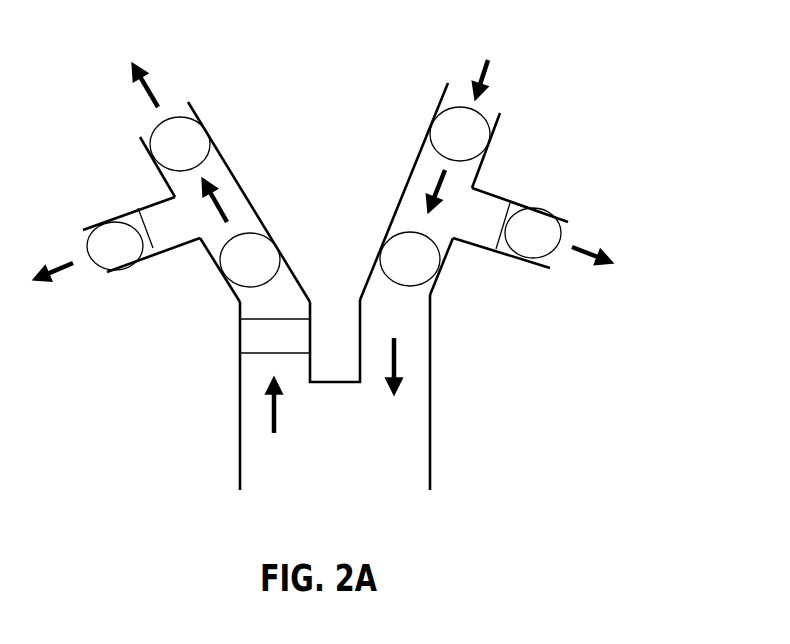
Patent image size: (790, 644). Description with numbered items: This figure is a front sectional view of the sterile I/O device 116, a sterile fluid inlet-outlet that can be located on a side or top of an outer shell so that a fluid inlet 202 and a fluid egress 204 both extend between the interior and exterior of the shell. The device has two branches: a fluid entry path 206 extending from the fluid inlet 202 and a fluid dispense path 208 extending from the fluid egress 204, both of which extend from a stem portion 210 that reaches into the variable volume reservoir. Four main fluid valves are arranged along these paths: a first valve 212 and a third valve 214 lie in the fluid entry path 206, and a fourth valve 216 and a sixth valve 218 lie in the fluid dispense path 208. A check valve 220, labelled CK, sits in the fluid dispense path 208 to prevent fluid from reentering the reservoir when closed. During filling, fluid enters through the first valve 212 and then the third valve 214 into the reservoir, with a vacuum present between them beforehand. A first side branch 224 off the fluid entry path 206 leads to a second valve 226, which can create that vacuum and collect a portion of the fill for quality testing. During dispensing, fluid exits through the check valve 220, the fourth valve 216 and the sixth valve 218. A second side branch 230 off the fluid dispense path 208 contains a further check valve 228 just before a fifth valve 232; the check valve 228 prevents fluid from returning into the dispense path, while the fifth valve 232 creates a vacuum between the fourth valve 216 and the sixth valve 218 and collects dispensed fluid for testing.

The sterile I/O device 116 is at (662, 83).
The fluid inlet 202 is at (507, 94).
The fluid egress 204 is at (188, 90).
The fluid entry path 206 is at (447, 301).
The fluid dispense path 208 is at (223, 310).
The stem portion 210 is at (432, 455).
The V1 valve 212 is at (491, 131).
The V3 valve 214 is at (378, 247).
The V4 valve 216 is at (279, 247).
The V6 valve 218 is at (210, 134).
The check valve 220 is at (240, 338).
The first side branch 224 is at (566, 192).
The V2 valve 226 is at (562, 230).
The check valve 228 is at (150, 203).
The second side branch 230 is at (113, 204).
The V5 valve 232 is at (100, 222).